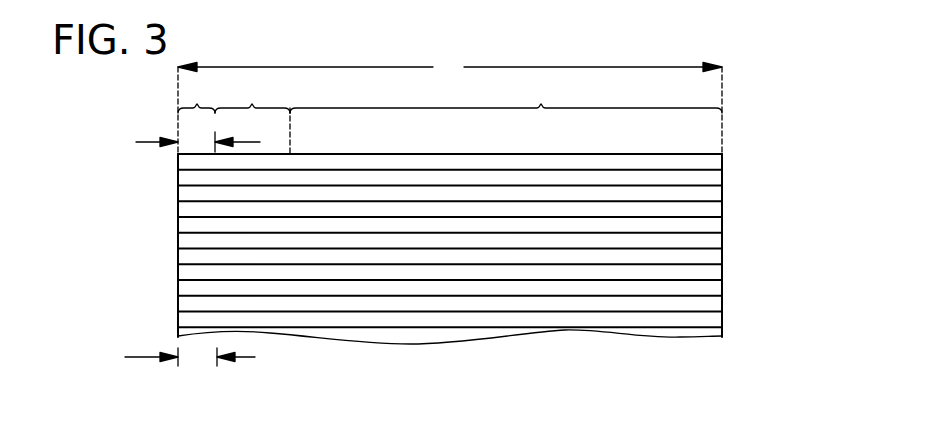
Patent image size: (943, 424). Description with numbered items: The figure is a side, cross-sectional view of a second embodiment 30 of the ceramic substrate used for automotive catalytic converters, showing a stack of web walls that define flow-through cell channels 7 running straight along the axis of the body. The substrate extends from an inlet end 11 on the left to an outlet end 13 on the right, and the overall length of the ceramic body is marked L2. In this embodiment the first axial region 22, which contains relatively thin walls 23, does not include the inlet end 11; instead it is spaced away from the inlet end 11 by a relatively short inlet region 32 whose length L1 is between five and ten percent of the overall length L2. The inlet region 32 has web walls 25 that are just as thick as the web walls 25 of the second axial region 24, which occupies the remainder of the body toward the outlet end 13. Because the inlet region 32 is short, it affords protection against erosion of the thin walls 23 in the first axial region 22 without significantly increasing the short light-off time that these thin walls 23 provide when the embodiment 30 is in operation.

The second embodiment 30 is at (157, 182).
The flow-through cell channels 7 is at (188, 180).
The inlet end 11 is at (178, 272).
The web walls 25 is at (197, 280).
The outlet end 13 is at (725, 238).
The thin walls 23 is at (281, 312).
The inlet region 32 is at (198, 117).
The first axial region 22 is at (252, 118).
The second axial region 24 is at (506, 97).
The length of inlet region L1 is at (190, 362).
The overall length L2 is at (450, 106).